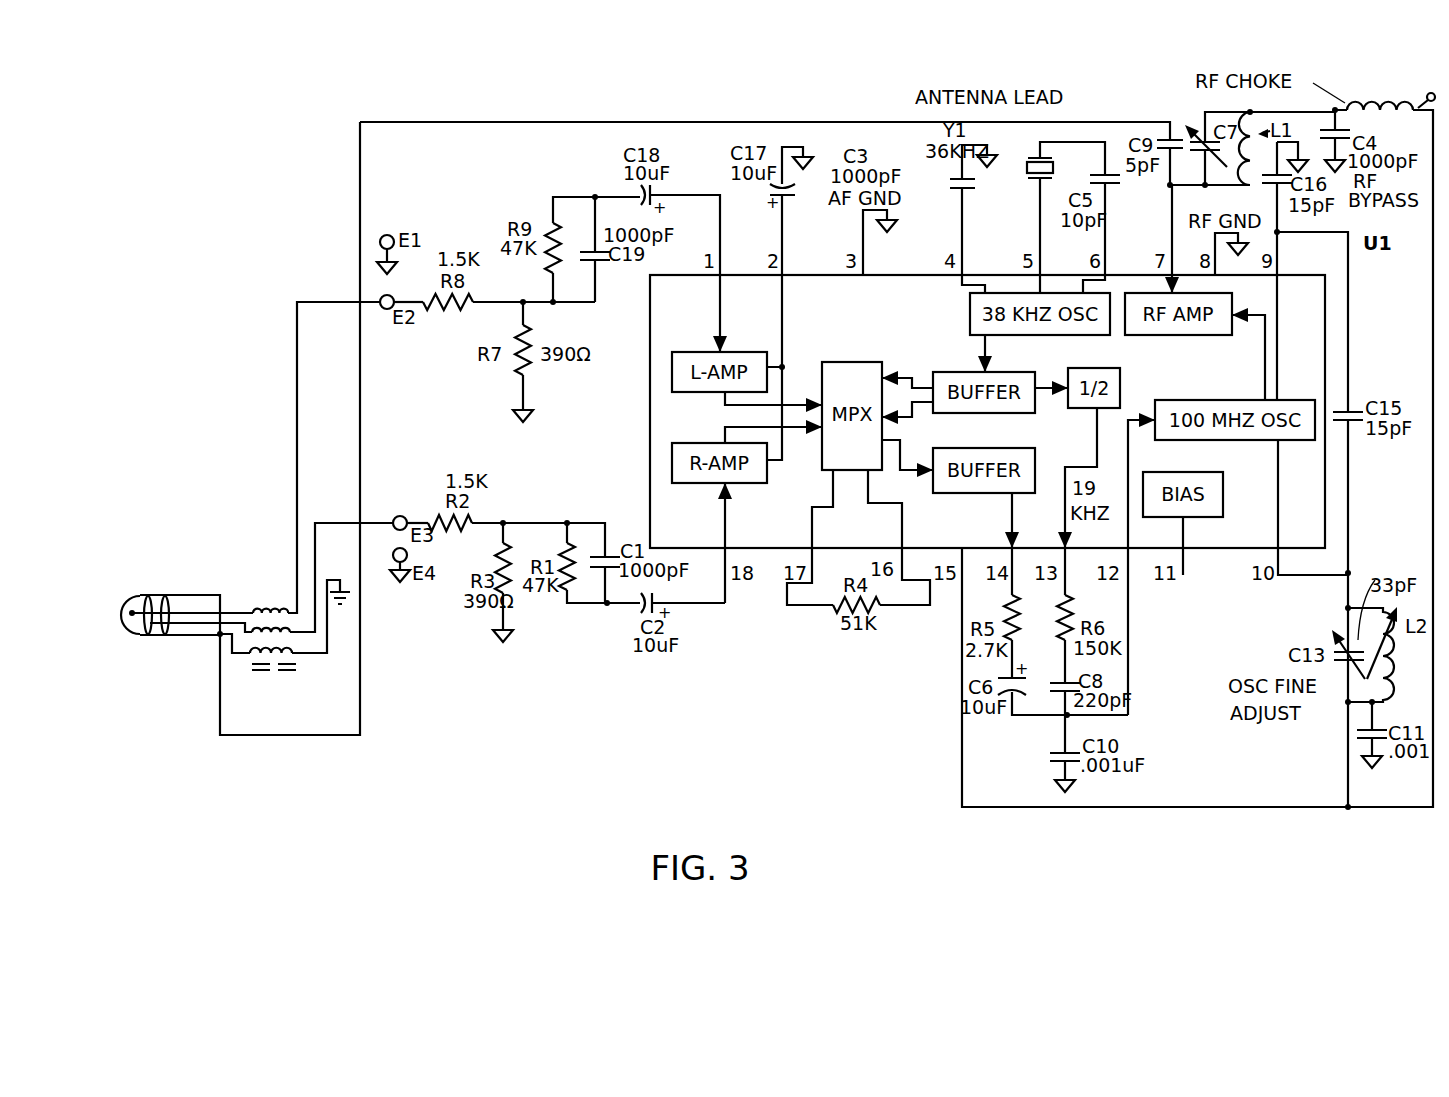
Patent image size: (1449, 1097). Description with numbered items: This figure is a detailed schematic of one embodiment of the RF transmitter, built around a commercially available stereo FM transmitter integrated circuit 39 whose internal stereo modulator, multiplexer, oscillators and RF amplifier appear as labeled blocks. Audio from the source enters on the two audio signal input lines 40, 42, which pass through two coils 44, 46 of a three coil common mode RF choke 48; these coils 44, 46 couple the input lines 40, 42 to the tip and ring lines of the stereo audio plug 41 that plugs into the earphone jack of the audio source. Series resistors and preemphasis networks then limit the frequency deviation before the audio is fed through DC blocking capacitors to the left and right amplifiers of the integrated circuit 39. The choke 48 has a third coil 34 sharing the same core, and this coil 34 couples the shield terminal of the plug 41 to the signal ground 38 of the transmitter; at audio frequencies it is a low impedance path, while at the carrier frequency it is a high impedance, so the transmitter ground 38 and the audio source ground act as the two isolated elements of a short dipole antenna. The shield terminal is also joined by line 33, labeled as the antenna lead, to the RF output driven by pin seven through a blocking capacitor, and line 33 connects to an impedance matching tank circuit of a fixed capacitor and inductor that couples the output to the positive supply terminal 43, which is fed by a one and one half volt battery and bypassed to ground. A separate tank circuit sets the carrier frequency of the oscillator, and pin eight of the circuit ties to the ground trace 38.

The line 33 is at (768, 120).
The third coil 34 is at (295, 655).
The signal ground 38 is at (327, 580).
The stereo FM transmitter integrated circuit 39 is at (1325, 478).
The audio signal input line 40 is at (308, 302).
The stereo audio plug 41 is at (148, 548).
The audio signal input line 42 is at (315, 522).
The positive voltage supply terminal 43 is at (1410, 104).
The coil 44 is at (259, 605).
The coil 46 is at (302, 634).
The common mode RF choke 48 is at (236, 670).